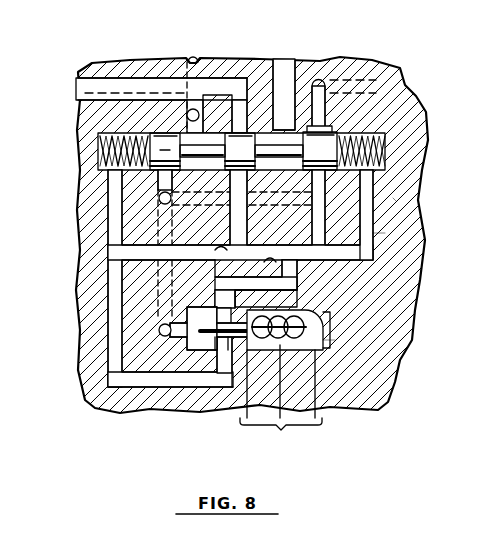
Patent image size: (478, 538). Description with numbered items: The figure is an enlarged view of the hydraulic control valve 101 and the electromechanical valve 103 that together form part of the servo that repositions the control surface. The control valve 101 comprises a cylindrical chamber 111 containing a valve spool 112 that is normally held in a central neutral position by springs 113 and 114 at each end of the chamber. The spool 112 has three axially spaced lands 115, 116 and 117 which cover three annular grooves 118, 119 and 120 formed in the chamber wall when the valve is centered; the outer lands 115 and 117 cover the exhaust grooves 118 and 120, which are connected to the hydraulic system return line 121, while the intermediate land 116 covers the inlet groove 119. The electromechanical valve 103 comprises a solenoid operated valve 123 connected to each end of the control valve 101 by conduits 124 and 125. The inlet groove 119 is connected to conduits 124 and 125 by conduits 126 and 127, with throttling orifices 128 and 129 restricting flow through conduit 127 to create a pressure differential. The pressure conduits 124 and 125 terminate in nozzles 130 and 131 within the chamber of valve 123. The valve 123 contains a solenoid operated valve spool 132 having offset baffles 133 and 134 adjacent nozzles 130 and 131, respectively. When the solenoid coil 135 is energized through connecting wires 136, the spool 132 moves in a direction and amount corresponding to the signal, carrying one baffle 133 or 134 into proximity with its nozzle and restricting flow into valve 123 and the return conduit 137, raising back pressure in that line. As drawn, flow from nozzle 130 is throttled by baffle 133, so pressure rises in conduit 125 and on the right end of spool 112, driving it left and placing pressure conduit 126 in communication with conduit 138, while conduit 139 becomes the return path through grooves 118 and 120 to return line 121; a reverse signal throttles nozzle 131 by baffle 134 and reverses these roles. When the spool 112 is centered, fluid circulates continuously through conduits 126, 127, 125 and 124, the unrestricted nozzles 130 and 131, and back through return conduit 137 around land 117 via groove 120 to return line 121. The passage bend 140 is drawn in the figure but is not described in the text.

The hydraulic control valve 101 is at (216, 118).
The electromechanical valve 103 is at (336, 346).
The cylindrical chamber 111 is at (280, 143).
The valve spool 112 is at (320, 124).
The spring 113 is at (386, 150).
The spring 114 is at (99, 148).
The land 115 is at (163, 150).
The intermediate land 116 is at (246, 147).
The land 117 is at (395, 200).
The exhaust groove 118 is at (110, 203).
The inlet groove 119 is at (242, 148).
The exhaust groove 120 is at (385, 233).
The hydraulic system return line 121 is at (385, 62).
The solenoid operated valve 123 is at (212, 346).
The conduit 124 is at (110, 378).
The conduit 125 is at (283, 279).
The pressure conduit 126 is at (86, 89).
The conduit 127 is at (250, 258).
The throttling orifice 128 is at (221, 247).
The throttling orifice 129 is at (282, 250).
The nozzle 130 is at (225, 309).
The nozzle 131 is at (228, 351).
The solenoid operated valve spool 132 is at (300, 335).
The baffle 133 is at (238, 304).
The baffle 134 is at (203, 342).
The solenoid coil 135 is at (328, 321).
The connecting wires 136 is at (281, 383).
The return conduit 137 is at (159, 328).
The conduit 138 is at (278, 132).
The conduit 139 is at (193, 57).
The passage bend 140 is at (368, 250).